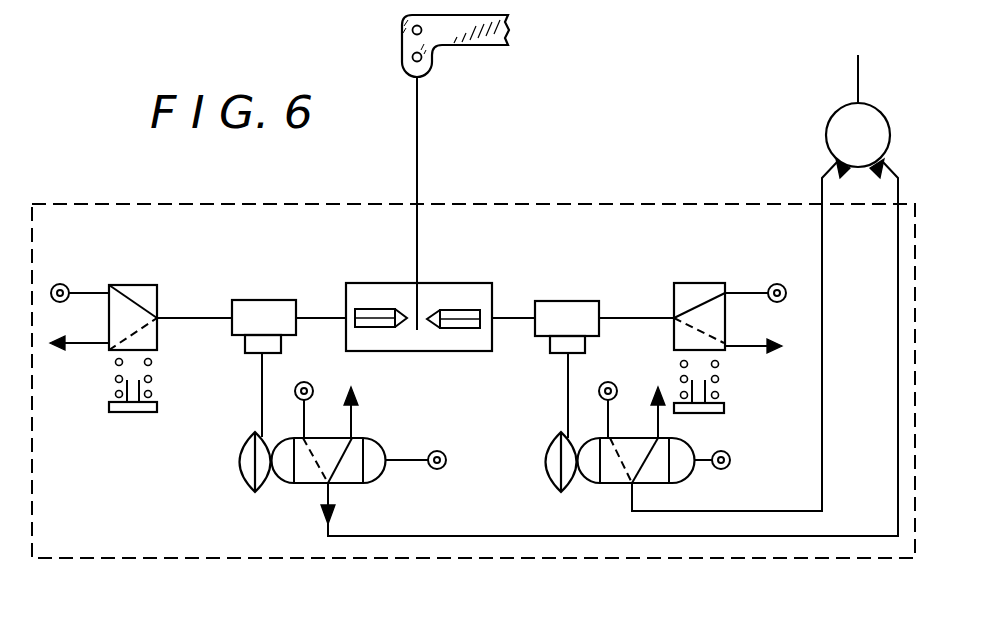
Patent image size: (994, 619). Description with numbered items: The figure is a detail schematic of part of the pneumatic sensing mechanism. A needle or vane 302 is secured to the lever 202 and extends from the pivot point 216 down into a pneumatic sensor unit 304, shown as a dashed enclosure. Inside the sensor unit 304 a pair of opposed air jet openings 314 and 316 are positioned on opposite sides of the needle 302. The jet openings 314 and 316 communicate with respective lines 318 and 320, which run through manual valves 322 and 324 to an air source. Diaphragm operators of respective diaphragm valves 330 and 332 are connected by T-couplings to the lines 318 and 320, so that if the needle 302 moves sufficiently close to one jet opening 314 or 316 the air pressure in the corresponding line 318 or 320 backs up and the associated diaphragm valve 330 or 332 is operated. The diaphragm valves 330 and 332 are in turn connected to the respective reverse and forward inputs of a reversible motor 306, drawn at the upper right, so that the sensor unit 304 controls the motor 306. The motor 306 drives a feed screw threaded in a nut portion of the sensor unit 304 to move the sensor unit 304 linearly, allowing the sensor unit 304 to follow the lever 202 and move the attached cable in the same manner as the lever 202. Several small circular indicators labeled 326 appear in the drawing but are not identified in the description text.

The lever 202 is at (448, 28).
The pivot point 216 is at (412, 34).
The needle or vane 302 is at (417, 125).
The pneumatic sensor unit 304 is at (722, 203).
The reversible motor 306 is at (827, 138).
The air jet opening 314 is at (467, 312).
The air jet opening 316 is at (375, 310).
The line 318 is at (518, 315).
The line 320 is at (320, 315).
The manual valve 322 is at (717, 283).
The manual valve 324 is at (134, 287).
The pressure gauge 326 is at (60, 284).
The diaphragm valve 330 is at (610, 472).
The diaphragm valve 332 is at (300, 470).